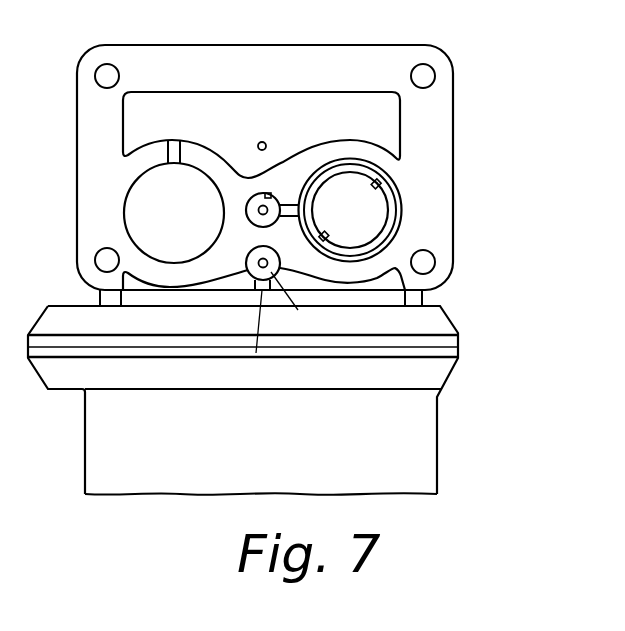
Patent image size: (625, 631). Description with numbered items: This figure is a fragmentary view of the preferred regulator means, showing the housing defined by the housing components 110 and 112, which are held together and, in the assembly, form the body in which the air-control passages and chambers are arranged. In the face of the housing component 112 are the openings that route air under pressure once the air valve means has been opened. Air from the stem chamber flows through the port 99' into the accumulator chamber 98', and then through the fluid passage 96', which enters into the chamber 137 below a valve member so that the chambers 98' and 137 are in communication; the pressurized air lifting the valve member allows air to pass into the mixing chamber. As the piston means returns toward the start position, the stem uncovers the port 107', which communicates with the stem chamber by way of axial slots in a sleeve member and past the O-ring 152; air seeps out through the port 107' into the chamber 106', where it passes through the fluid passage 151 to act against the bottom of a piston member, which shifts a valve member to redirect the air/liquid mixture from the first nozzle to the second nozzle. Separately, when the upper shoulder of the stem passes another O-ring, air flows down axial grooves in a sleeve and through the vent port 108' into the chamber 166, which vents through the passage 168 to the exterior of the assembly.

The housing component 112 is at (443, 104).
The accumulator chamber 98' is at (261, 94).
The chamber 137 is at (126, 203).
The fluid passage 96' is at (168, 130).
The port 99' is at (247, 126).
The chamber 106' is at (286, 178).
The port 107' is at (221, 217).
The O-ring 152 is at (402, 206).
The fluid passage 151 is at (301, 211).
The vent port 108' is at (232, 290).
The chamber 166 is at (308, 304).
The passage 168 is at (254, 338).
The housing component 110 is at (416, 444).